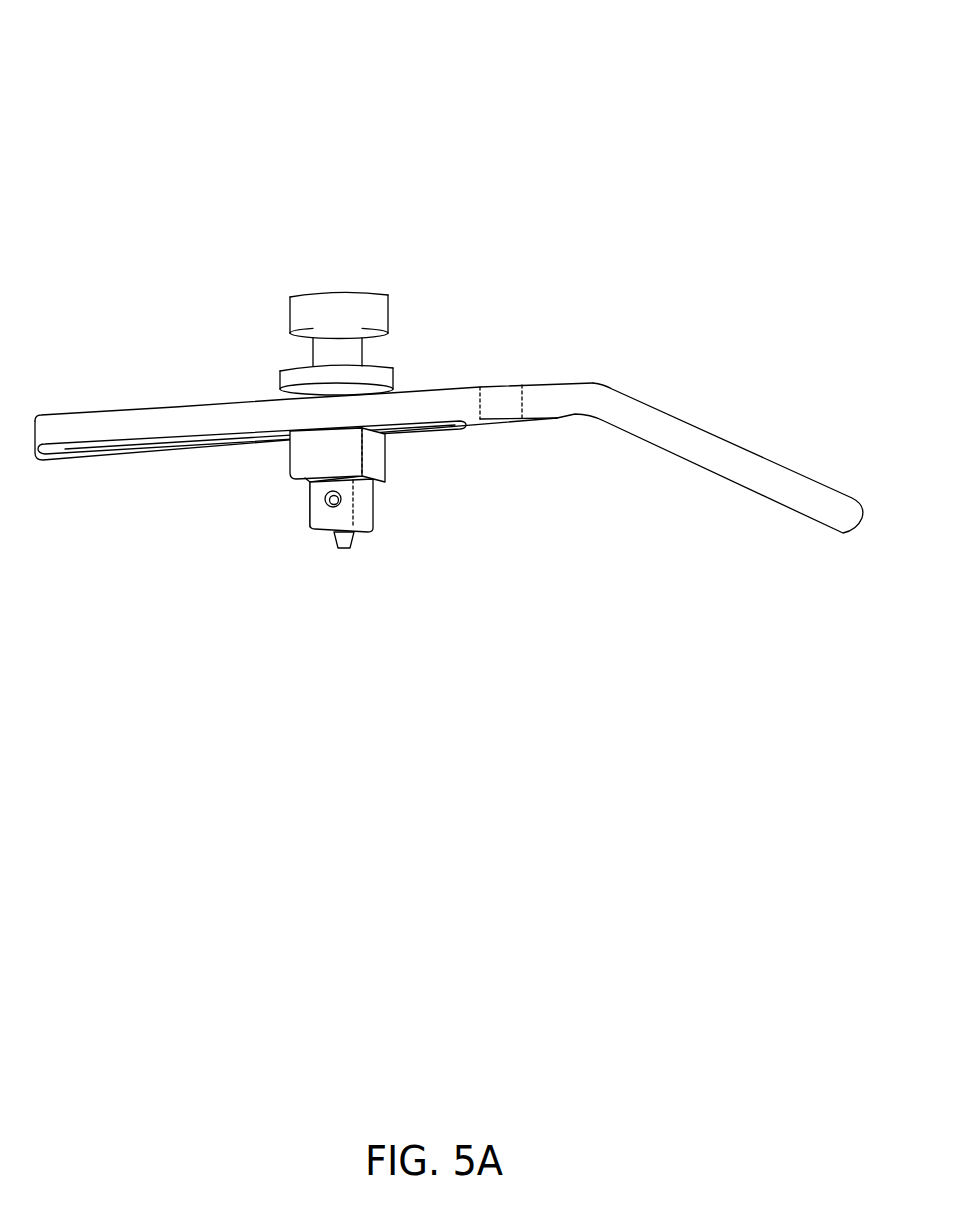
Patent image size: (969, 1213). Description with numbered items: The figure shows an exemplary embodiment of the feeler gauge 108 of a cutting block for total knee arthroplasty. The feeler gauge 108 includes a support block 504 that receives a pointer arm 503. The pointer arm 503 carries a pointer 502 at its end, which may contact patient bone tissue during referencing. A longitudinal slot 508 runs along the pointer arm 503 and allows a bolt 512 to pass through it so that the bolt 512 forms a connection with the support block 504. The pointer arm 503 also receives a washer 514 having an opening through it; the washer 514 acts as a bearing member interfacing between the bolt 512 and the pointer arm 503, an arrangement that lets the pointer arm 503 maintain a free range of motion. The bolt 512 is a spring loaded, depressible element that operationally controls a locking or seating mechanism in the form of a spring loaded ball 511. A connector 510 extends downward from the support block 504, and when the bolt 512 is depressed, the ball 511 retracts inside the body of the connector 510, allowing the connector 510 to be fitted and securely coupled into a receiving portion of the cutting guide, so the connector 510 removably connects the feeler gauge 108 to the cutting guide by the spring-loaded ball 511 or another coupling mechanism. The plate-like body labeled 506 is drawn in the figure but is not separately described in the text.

The feeler gauge 108 is at (449, 340).
The pointer 502 is at (718, 415).
The pointer arm 503 is at (478, 437).
The support block 504 is at (376, 458).
The plate 506 is at (160, 372).
The longitudinal slot 508 is at (145, 437).
The connector 510 is at (343, 547).
The spring loaded ball 511 is at (319, 505).
The bolt 512 is at (340, 307).
The washer 514 is at (382, 378).